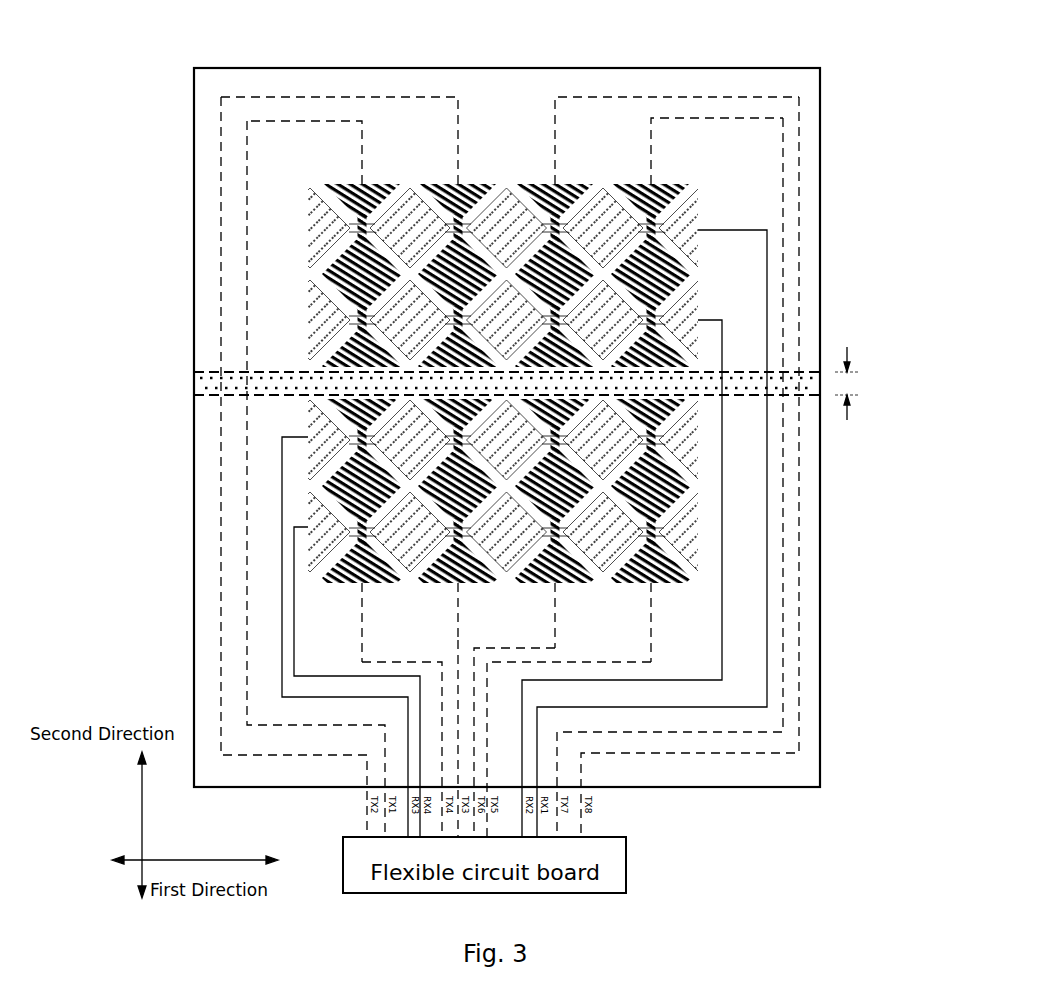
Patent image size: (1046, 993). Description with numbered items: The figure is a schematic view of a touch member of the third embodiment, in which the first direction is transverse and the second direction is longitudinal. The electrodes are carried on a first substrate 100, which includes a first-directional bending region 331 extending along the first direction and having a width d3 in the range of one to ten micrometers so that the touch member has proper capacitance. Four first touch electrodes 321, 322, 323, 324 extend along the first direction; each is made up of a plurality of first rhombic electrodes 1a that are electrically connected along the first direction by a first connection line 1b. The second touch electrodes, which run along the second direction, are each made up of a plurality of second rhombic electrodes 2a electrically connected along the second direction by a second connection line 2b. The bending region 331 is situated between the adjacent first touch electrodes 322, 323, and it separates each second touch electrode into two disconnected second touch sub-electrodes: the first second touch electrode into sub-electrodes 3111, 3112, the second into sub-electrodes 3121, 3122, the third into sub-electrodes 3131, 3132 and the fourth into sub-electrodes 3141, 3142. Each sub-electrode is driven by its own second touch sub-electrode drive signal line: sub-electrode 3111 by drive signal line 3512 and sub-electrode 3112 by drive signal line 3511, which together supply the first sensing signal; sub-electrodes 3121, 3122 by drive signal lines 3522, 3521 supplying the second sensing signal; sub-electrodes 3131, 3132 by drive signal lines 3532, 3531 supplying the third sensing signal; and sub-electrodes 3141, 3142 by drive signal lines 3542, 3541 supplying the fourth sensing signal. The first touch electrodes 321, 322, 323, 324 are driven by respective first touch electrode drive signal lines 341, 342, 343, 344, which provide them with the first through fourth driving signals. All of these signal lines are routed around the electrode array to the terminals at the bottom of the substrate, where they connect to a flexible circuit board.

The first substrate 100 is at (686, 68).
The second touch sub-electrode 3111 is at (362, 184).
The second touch sub-electrode 3112 is at (366, 583).
The second touch sub-electrode 3121 is at (458, 184).
The second touch sub-electrode 3122 is at (462, 583).
The second touch sub-electrode 3131 is at (556, 184).
The second touch sub-electrode 3132 is at (558, 583).
The second touch sub-electrode 3141 is at (652, 184).
The second touch sub-electrode 3142 is at (654, 583).
The first rhombic electrode 1a is at (514, 214).
The first connection line 1b is at (466, 212).
The second rhombic electrode 2a is at (686, 272).
The second connection line 2b is at (658, 312).
The first touch electrode 321 is at (308, 229).
The first touch electrode 322 is at (308, 321).
The first touch electrode 323 is at (322, 447).
The first touch electrode 324 is at (333, 552).
The first-directional bending region 331 is at (200, 383).
The width of the bending region d3 is at (855, 383).
The first touch electrode drive signal line 341 is at (767, 521).
The first touch electrode drive signal line 342 is at (722, 555).
The first touch electrode drive signal line 343 is at (282, 602).
The first touch electrode drive signal line 344 is at (294, 628).
The second touch sub-electrode drive signal line 3511 is at (360, 647).
The second touch sub-electrode drive signal line 3512 is at (247, 535).
The second touch sub-electrode drive signal line 3521 is at (457, 636).
The second touch sub-electrode drive signal line 3522 is at (221, 500).
The second touch sub-electrode drive signal line 3531 is at (554, 636).
The second touch sub-electrode drive signal line 3532 is at (799, 587).
The second touch sub-electrode drive signal line 3541 is at (650, 636).
The second touch sub-electrode drive signal line 3542 is at (783, 622).